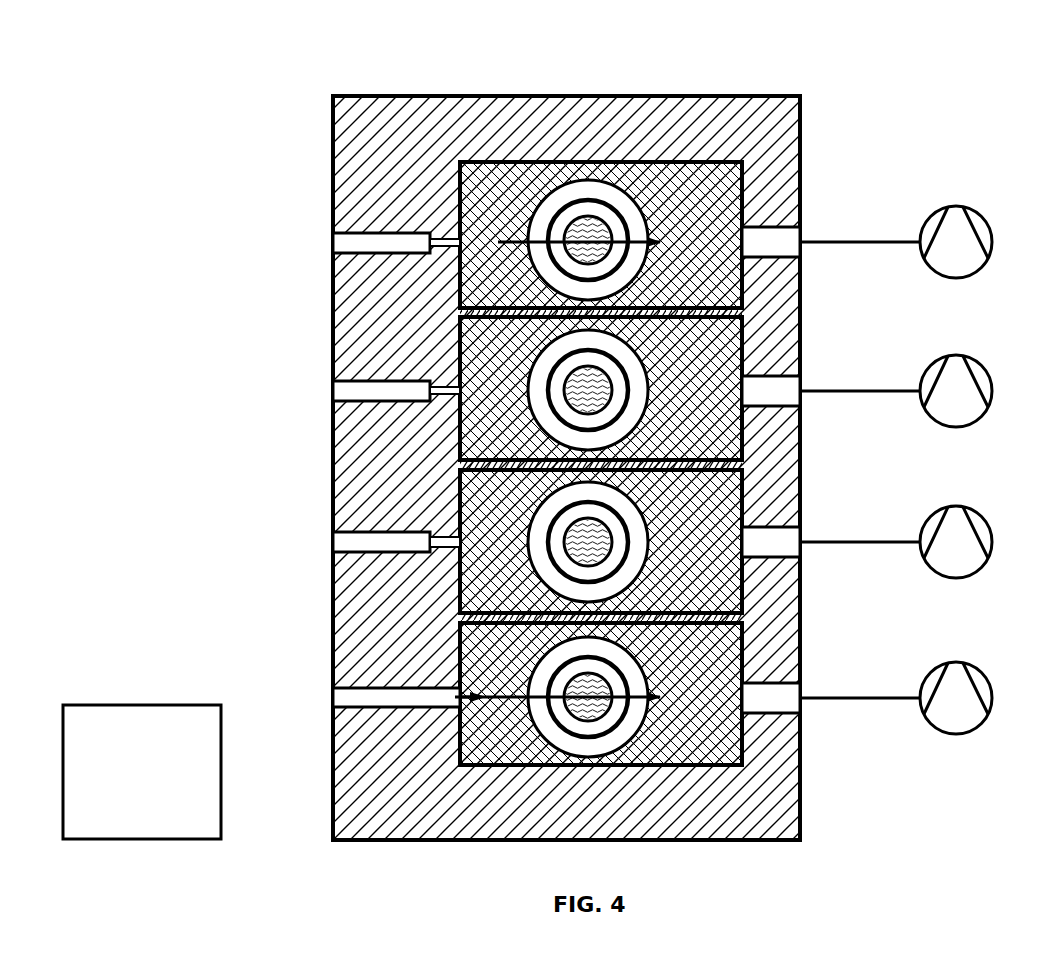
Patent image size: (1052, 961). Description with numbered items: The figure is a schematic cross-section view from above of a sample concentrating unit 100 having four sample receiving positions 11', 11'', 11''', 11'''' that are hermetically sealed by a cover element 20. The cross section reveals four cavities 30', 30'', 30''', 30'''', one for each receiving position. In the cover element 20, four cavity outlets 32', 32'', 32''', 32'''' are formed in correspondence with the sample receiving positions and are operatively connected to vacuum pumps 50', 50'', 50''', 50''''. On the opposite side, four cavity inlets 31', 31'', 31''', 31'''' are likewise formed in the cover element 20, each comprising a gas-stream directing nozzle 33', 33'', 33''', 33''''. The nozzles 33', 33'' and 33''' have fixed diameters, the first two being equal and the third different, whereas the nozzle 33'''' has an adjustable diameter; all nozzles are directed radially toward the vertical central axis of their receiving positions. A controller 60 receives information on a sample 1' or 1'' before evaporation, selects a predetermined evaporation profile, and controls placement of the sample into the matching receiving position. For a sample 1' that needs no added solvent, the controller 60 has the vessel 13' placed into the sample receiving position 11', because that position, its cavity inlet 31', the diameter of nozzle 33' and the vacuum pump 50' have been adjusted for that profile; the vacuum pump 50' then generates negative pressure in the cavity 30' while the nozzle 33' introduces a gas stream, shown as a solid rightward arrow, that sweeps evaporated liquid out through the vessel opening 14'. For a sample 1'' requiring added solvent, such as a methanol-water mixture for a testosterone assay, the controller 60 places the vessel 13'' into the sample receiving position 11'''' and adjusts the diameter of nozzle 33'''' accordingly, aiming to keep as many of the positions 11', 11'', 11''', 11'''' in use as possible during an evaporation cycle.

The sample concentrating unit 100 is at (276, 68).
The cover element 20 is at (720, 123).
The cavity 30' is at (663, 235).
The cavity 30'' is at (667, 388).
The cavity 30''' is at (670, 541).
The cavity 30'''' is at (674, 694).
The sample receiving position 11' is at (696, 224).
The sample receiving position 11'' is at (700, 376).
The sample receiving position 11''' is at (703, 527).
The sample receiving position 11'''' is at (707, 682).
The sample vessel 13' is at (641, 258).
The sample vessel 13'' is at (645, 714).
The opening 14' is at (558, 251).
The sample 1' is at (550, 223).
The sample 1'' is at (550, 679).
The cavity inlet 31' is at (333, 230).
The cavity inlet 31'' is at (333, 378).
The cavity inlet 31''' is at (333, 529).
The cavity inlet 31'''' is at (344, 685).
The gas-stream directing nozzle 33' is at (353, 209).
The gas-stream directing nozzle 33'' is at (353, 356).
The gas-stream directing nozzle 33''' is at (353, 509).
The gas-stream directing nozzle 33'''' is at (358, 664).
The cavity outlet 32' is at (829, 220).
The cavity outlet 32'' is at (833, 369).
The cavity outlet 32''' is at (836, 520).
The cavity outlet 32'''' is at (840, 676).
The vacuum pump 50' is at (912, 268).
The vacuum pump 50'' is at (915, 417).
The vacuum pump 50''' is at (919, 567).
The vacuum pump 50'''' is at (922, 724).
The controller 60 is at (157, 786).